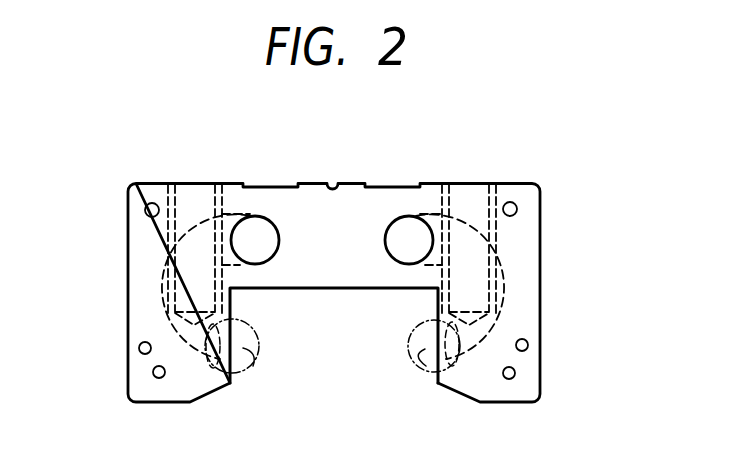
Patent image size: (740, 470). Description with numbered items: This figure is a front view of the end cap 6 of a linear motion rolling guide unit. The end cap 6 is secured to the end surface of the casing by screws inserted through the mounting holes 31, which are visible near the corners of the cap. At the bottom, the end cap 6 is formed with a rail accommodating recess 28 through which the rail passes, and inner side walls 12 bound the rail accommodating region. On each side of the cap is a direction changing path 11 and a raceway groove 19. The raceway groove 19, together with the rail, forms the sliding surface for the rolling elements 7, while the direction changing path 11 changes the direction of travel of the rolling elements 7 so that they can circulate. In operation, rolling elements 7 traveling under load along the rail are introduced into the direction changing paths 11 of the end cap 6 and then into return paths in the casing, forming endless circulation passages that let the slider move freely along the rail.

The end cap 6 is at (352, 190).
The rolling elements 7 is at (255, 365).
The direction changing path 11 is at (202, 222).
The inner side walls 12 is at (235, 301).
The raceway groove 19 is at (218, 370).
The rail accommodating recess 28 is at (332, 318).
The mounting holes 31 is at (145, 210).